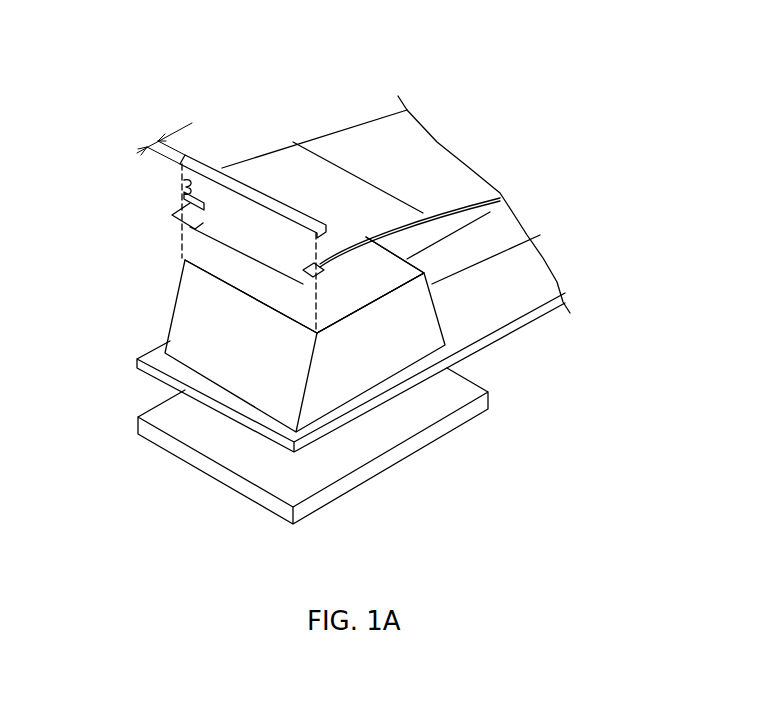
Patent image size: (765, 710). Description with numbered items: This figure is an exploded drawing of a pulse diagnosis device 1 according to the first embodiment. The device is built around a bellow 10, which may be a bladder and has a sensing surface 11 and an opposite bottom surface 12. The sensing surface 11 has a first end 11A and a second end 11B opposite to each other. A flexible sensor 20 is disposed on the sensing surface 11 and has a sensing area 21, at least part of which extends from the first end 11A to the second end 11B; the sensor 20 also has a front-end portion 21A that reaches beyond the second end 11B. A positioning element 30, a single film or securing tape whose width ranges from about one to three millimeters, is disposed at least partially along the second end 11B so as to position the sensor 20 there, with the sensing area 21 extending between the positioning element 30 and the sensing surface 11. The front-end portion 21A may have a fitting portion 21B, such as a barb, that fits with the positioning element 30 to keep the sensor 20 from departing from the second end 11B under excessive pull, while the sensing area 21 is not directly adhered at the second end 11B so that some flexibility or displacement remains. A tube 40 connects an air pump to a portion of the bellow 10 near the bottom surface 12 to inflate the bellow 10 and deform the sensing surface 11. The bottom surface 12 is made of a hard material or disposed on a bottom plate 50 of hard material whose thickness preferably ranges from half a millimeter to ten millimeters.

The pulse diagnosis device 1 is at (90, 44).
The bellow 10 is at (197, 293).
The sensing surface 11 is at (355, 282).
The first end 11A is at (401, 252).
The second end 11B is at (241, 306).
The bottom surface 12 is at (212, 420).
The sensor 20 is at (355, 147).
The sensing area 21 is at (287, 157).
The front-end portion 21A is at (197, 223).
The fitting portion 21B is at (191, 200).
The positioning element 30 is at (207, 160).
The tube 40 is at (460, 250).
The bottom plate 50 is at (378, 430).